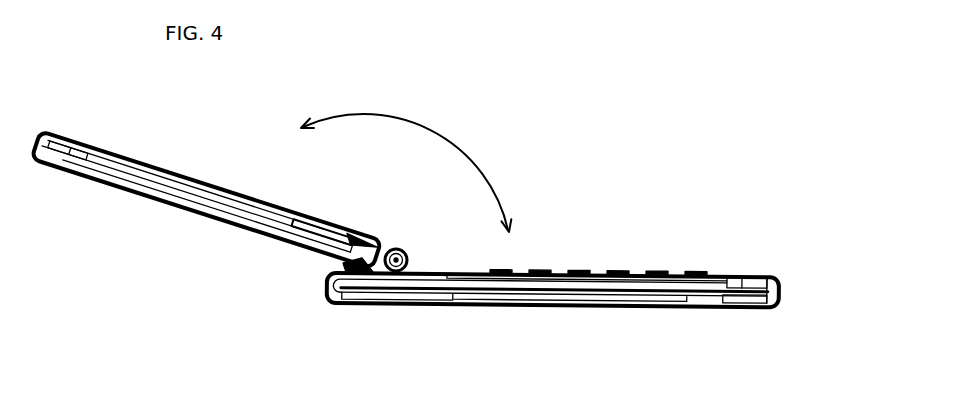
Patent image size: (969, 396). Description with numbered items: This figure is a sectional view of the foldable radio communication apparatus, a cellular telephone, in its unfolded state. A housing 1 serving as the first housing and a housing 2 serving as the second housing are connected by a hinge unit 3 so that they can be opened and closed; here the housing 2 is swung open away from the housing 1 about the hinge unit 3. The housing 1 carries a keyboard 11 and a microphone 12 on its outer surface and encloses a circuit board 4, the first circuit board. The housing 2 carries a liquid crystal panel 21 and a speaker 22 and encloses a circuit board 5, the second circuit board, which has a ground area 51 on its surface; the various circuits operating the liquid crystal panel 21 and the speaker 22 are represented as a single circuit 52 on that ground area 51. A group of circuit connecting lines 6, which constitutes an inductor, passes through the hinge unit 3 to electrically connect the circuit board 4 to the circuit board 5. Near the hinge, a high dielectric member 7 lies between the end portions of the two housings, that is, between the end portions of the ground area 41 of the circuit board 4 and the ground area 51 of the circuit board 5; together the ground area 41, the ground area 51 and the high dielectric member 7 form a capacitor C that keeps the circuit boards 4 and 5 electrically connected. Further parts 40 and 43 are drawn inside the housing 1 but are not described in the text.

The housing 1 is at (783, 277).
The housing 2 is at (44, 128).
The hinge unit 3 is at (399, 249).
The circuit board 4 is at (781, 291).
The circuit board 5 is at (95, 168).
The group of circuit connecting lines 6 is at (378, 305).
The high dielectric member 7 is at (336, 283).
The keyboard 11 is at (650, 271).
The microphone 12 is at (745, 277).
The liquid crystal panel 21 is at (213, 185).
The speaker 22 is at (54, 142).
The battery 40 is at (747, 304).
The ground area 41 is at (352, 304).
The circuit board 43 is at (588, 307).
The ground area 51 is at (343, 266).
The circuit 52 is at (292, 214).
The capacitor C is at (250, 266).